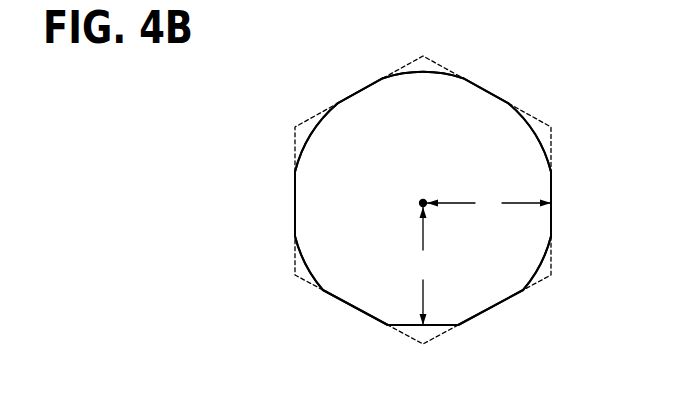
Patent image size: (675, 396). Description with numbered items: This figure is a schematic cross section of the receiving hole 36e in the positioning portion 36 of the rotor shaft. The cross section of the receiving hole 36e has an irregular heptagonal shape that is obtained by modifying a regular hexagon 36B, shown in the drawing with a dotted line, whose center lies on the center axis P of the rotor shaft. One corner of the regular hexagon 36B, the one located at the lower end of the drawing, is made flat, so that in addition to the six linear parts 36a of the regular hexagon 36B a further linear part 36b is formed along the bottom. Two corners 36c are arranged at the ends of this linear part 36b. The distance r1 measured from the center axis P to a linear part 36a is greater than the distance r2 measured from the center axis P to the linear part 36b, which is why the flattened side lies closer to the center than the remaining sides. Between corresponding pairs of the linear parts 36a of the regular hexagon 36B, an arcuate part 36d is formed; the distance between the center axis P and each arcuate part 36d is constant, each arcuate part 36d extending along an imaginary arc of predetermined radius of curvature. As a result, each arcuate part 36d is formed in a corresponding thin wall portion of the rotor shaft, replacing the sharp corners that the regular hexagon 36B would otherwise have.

The positioning portion 36 is at (375, 103).
The regular hexagon 36B is at (551, 128).
The linear part 36a is at (365, 92).
The linear part 36b is at (405, 324).
The corner 36c is at (387, 322).
The arcuate part 36d is at (313, 128).
The receiving hole 36e is at (502, 102).
The center axis P is at (421, 200).
The distance r1 is at (489, 203).
The distance r2 is at (421, 266).